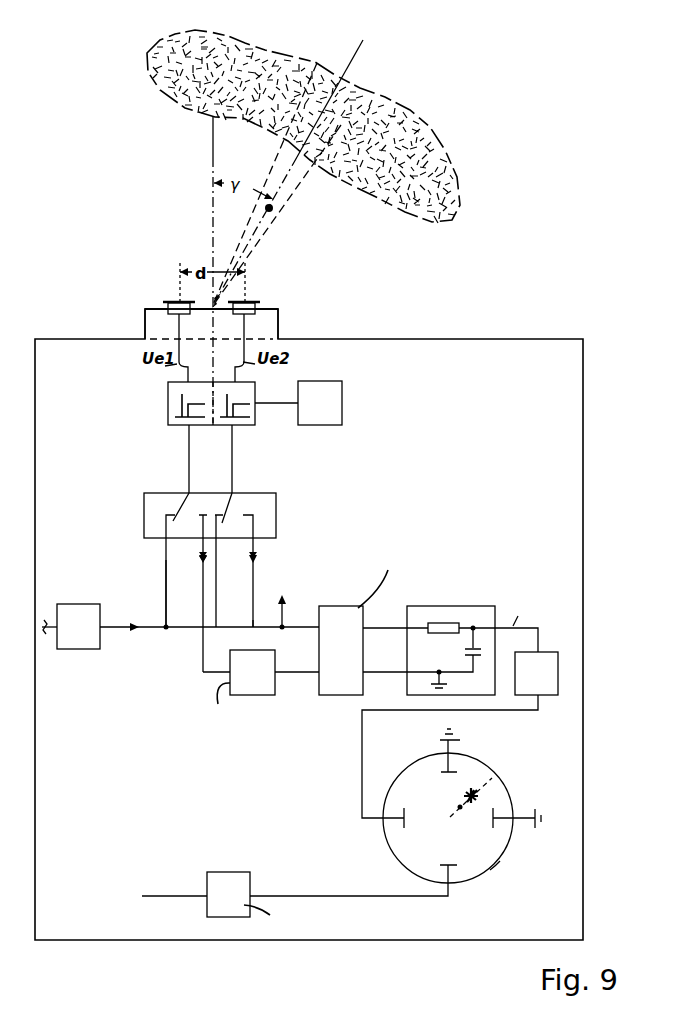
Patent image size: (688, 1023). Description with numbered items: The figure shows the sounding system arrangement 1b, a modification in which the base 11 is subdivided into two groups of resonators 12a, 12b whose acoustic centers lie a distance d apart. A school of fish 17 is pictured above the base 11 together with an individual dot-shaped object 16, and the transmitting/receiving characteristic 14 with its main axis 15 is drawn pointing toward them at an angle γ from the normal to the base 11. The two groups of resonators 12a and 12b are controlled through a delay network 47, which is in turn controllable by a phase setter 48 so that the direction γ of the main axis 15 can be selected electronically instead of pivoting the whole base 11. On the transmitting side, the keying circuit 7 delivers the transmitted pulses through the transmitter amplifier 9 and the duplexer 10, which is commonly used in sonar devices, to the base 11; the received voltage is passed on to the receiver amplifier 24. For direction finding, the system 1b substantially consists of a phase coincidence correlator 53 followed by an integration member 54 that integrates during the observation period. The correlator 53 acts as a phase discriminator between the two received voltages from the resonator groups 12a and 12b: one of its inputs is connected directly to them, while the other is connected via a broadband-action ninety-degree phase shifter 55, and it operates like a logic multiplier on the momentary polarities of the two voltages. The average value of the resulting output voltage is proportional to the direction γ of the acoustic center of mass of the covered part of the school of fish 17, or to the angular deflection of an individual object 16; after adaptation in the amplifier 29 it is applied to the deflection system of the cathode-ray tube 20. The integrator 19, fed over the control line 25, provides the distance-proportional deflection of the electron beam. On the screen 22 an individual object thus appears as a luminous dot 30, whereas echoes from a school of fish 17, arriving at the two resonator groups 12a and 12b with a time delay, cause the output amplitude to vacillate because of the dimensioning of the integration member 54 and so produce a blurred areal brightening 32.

The sounding system arrangement 1b is at (447, 348).
The keying circuit 7 is at (78, 649).
The transmitter amplifier 9 is at (93, 616).
The duplexer 10 is at (160, 496).
The base 11 is at (265, 329).
The first group of resonators 12a is at (170, 301).
The second group of resonators 12b is at (258, 301).
The transmitting/receiving characteristic 14 is at (296, 184).
The main axis 15 is at (302, 169).
The individual dot-shaped object 16 is at (271, 209).
The school of fish 17 is at (398, 126).
The integrator 19 is at (243, 883).
The cathode-ray tube 20 is at (398, 771).
The screen 22 is at (495, 858).
The receiver amplifier 24 is at (283, 601).
The control line 25 is at (171, 916).
The amplifier 29 is at (547, 652).
The luminous dot 30 is at (460, 797).
The blurred areal brightening 32 is at (483, 792).
The delay network 47 is at (170, 404).
The phase setter 48 is at (342, 398).
The phase coincidence correlator 53 is at (340, 614).
The integration member 54 is at (446, 614).
The 90° phase shifter 55 is at (268, 686).